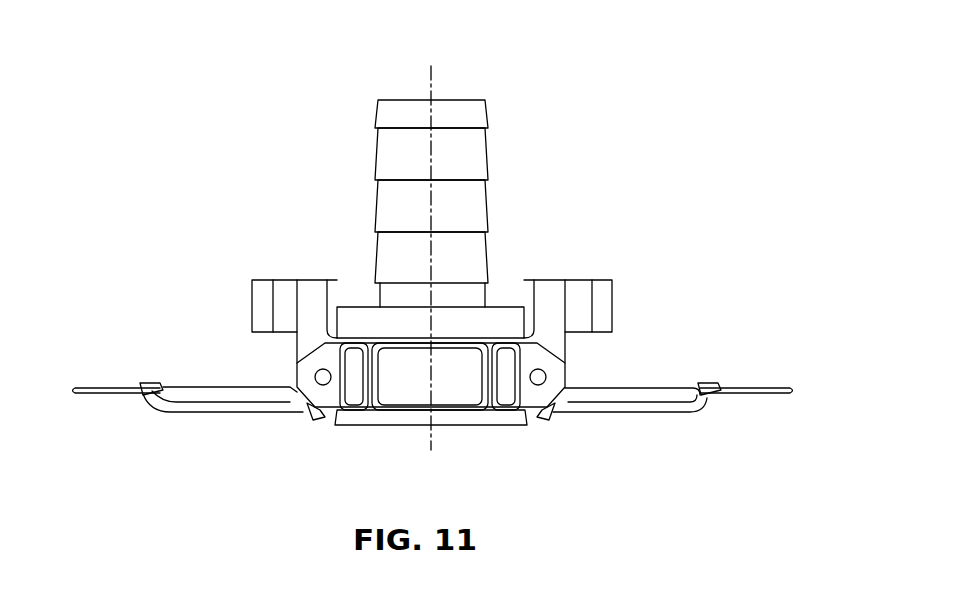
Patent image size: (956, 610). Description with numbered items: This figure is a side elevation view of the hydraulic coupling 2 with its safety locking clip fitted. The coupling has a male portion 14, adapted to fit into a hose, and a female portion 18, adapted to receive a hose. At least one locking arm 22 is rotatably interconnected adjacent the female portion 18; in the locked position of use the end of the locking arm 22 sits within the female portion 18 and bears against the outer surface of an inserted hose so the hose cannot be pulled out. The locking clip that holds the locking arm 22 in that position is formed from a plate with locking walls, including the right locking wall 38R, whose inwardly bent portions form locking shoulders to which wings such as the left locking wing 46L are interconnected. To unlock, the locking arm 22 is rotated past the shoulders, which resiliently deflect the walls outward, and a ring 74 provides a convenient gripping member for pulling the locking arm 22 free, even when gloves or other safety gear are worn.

The hydraulic coupling 2 is at (514, 176).
The male portion 14 is at (393, 112).
The female portion 18 is at (477, 410).
The locking arm 22 is at (217, 405).
The right locking wall 38R is at (552, 307).
The left locking wing 46L is at (252, 317).
The ring 74 is at (752, 395).